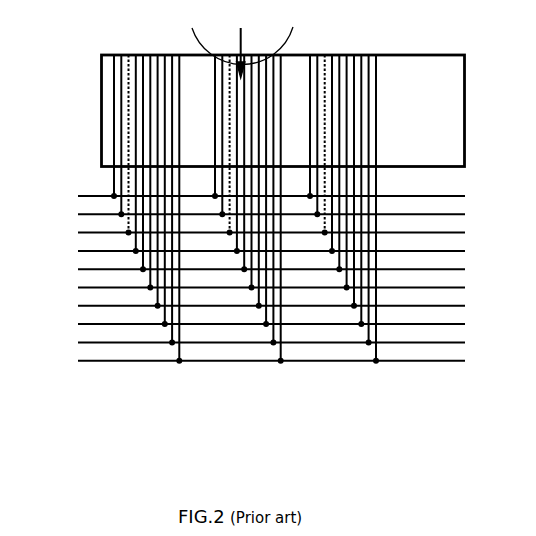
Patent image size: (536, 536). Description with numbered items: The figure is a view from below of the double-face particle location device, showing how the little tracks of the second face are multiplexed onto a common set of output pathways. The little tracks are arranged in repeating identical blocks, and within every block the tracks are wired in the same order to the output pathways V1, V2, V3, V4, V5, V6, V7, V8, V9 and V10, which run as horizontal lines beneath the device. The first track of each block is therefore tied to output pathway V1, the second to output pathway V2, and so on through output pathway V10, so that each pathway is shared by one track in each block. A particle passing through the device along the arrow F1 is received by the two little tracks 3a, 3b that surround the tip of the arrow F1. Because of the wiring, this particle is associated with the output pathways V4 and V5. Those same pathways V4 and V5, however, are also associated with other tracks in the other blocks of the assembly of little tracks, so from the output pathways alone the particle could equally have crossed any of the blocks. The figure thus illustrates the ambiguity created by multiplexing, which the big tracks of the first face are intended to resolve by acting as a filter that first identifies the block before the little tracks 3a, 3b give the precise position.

The output pathway V1 is at (261, 129).
The output pathway V2 is at (261, 138).
The output pathway V3 is at (261, 148).
The output pathway V4 is at (261, 157).
The output pathway V5 is at (261, 166).
The output pathway V6 is at (261, 175).
The output pathway V7 is at (261, 184).
The output pathway V8 is at (261, 193).
The output pathway V9 is at (261, 202).
The output pathway V10 is at (257, 212).
The little track 3a is at (206, 38).
The little track 3b is at (280, 37).
The passage of a particle F1 is at (252, 48).